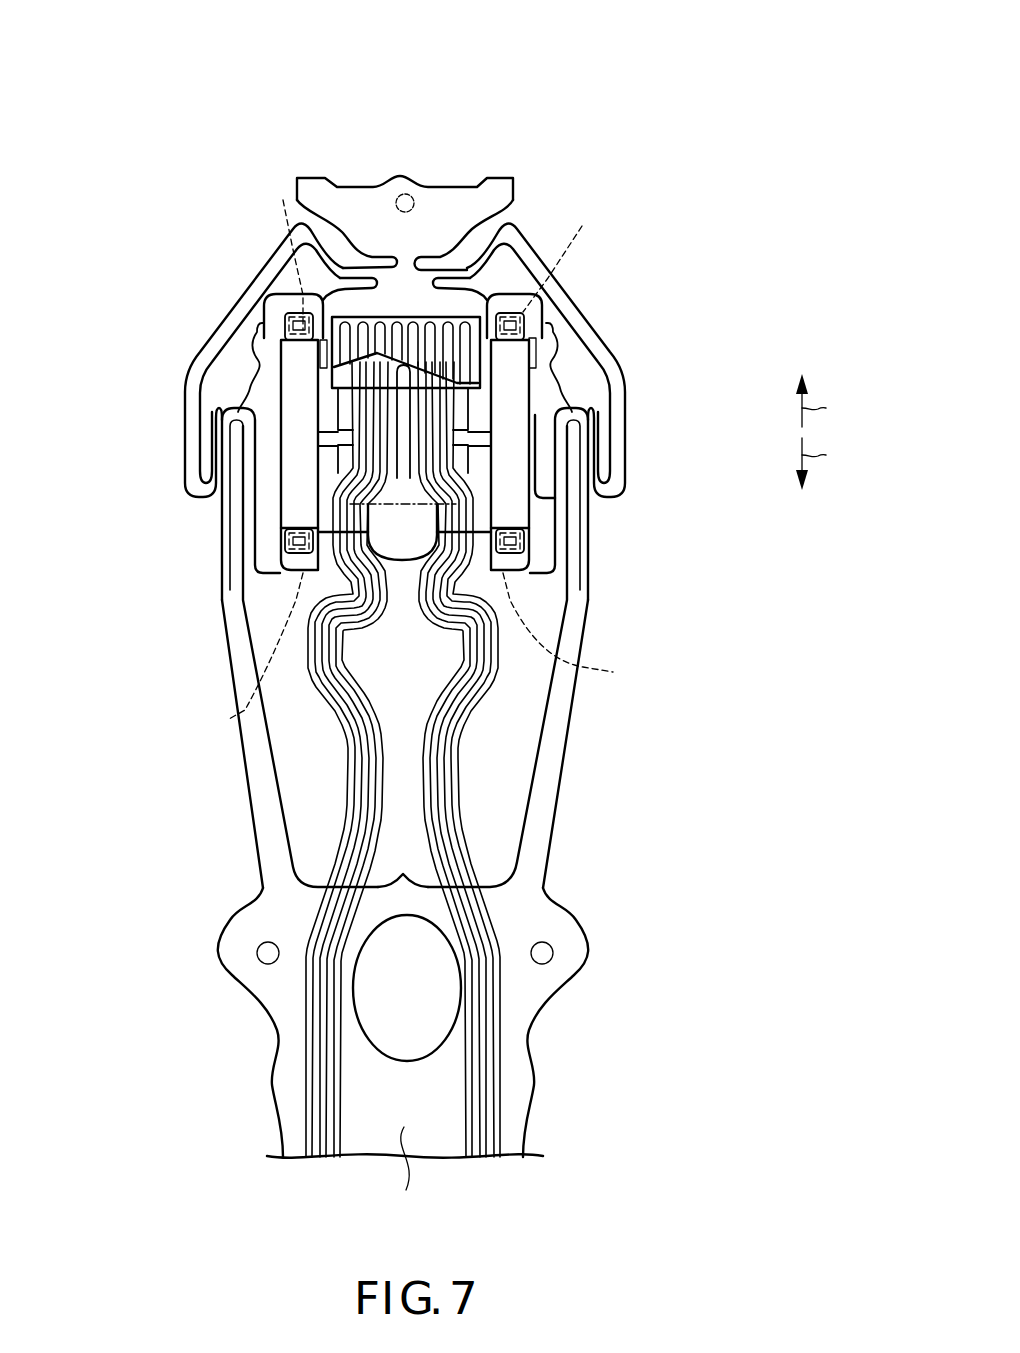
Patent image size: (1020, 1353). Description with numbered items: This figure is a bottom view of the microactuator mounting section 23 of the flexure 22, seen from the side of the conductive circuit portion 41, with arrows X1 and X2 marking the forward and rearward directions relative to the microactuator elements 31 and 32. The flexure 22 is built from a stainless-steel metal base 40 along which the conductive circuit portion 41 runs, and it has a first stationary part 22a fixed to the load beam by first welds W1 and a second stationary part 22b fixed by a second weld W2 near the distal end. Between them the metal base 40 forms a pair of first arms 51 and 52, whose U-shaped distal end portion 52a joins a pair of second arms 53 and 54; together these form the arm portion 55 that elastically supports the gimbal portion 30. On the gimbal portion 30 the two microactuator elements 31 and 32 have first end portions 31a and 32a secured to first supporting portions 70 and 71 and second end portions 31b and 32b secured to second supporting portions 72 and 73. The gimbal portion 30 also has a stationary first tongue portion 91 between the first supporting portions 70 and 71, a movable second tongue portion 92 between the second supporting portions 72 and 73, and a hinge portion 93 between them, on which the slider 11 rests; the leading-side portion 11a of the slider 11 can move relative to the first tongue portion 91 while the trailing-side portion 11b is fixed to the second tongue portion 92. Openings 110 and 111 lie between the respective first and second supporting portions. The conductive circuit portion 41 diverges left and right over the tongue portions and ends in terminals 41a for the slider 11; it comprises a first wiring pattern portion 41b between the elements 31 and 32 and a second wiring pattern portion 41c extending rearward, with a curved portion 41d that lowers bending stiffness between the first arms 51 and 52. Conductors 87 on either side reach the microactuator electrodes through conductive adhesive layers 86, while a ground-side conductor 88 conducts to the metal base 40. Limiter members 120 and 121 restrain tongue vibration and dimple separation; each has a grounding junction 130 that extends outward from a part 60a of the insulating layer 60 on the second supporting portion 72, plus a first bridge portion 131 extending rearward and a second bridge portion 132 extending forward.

The slider 11 is at (216, 413).
The leading-side portion 11a is at (233, 455).
The trailing-side portion 11b is at (280, 337).
The flexure 22 is at (556, 835).
The first stationary part 22a is at (547, 902).
The second stationary part 22b is at (362, 200).
The microactuator mounting section 23 is at (557, 103).
The gimbal portion 30 is at (275, 599).
The microactuator element 31 is at (300, 380).
The first end portion 31a is at (284, 552).
The second end portion 31b is at (290, 330).
The microactuator element 32 is at (531, 393).
The first end portion 32a is at (528, 548).
The second end portion 32b is at (523, 350).
The metal base 40 is at (407, 1173).
The conductive circuit portion 41 is at (480, 698).
The terminals 41a is at (415, 323).
The first wiring pattern portion 41b is at (415, 440).
The second wiring pattern portion 41c is at (443, 780).
The curved portion 41d is at (510, 627).
The first arm 51 is at (263, 762).
The first arm 52 is at (563, 757).
The distal end portion 52a is at (582, 400).
The second arm 53 is at (258, 330).
The second arm 54 is at (573, 315).
The arm portion 55 is at (172, 477).
The insulating layer 60 is at (556, 362).
The part of insulating layer 60a is at (320, 293).
The first supporting portion 70 is at (285, 515).
The first supporting portion 71 is at (543, 518).
The second supporting portion 72 is at (245, 305).
The second supporting portion 73 is at (540, 290).
The electrically conductive adhesive layer 86 is at (272, 292).
The conductor 87 is at (425, 653).
The ground-side conductor 88 is at (432, 254).
The first tongue portion 91 is at (518, 517).
The second tongue portion 92 is at (596, 425).
The hinge portion 93 is at (614, 480).
The opening 110 is at (262, 482).
The opening 111 is at (548, 481).
The limiter member 120 is at (240, 335).
The limiter member 121 is at (555, 372).
The grounding junction 130 is at (205, 345).
The first bridge portion 131 is at (281, 378).
The second bridge portion 132 is at (252, 282).
The first weld W1 is at (257, 954).
The second weld W2 is at (411, 194).
The arrow X1 is at (827, 432).
The arrow X2 is at (844, 457).